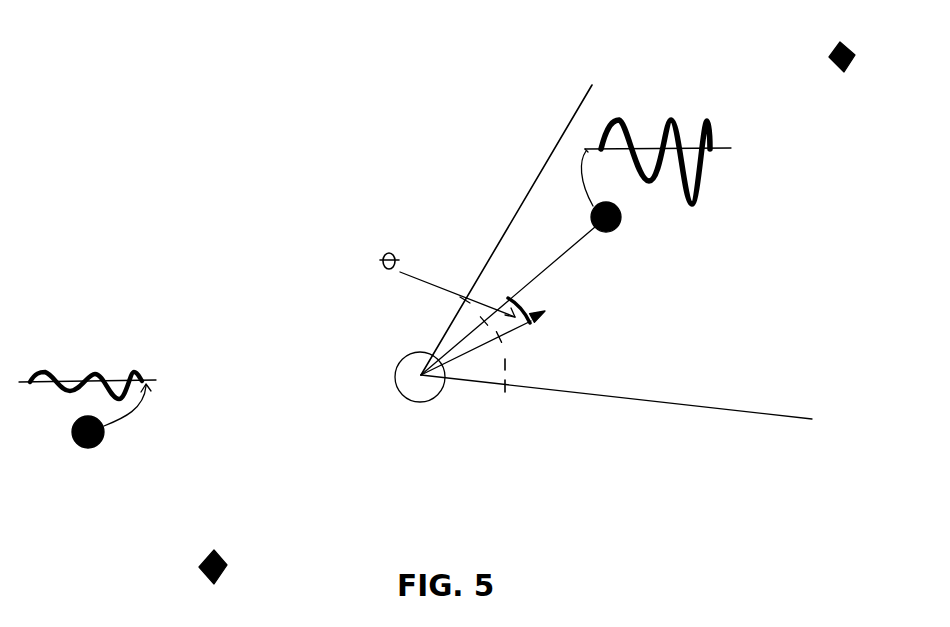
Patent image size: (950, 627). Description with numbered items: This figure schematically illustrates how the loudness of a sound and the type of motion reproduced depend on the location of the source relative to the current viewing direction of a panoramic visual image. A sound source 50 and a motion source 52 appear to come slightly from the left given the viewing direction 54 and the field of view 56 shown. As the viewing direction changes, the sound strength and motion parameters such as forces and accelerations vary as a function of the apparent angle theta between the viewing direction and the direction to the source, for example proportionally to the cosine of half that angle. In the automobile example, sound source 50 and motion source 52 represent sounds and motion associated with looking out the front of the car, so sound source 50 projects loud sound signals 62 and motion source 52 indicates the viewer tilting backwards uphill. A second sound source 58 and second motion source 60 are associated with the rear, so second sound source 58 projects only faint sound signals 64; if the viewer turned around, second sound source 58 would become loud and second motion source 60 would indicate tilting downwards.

The sound source 50 is at (620, 228).
The motion source 52 is at (850, 64).
The viewing direction 54 is at (518, 329).
The field of view 56 is at (511, 360).
The second sound source 58 is at (105, 440).
The second motion source 60 is at (204, 574).
The loud sound signals 62 is at (717, 149).
The faint sound signals 64 is at (144, 378).